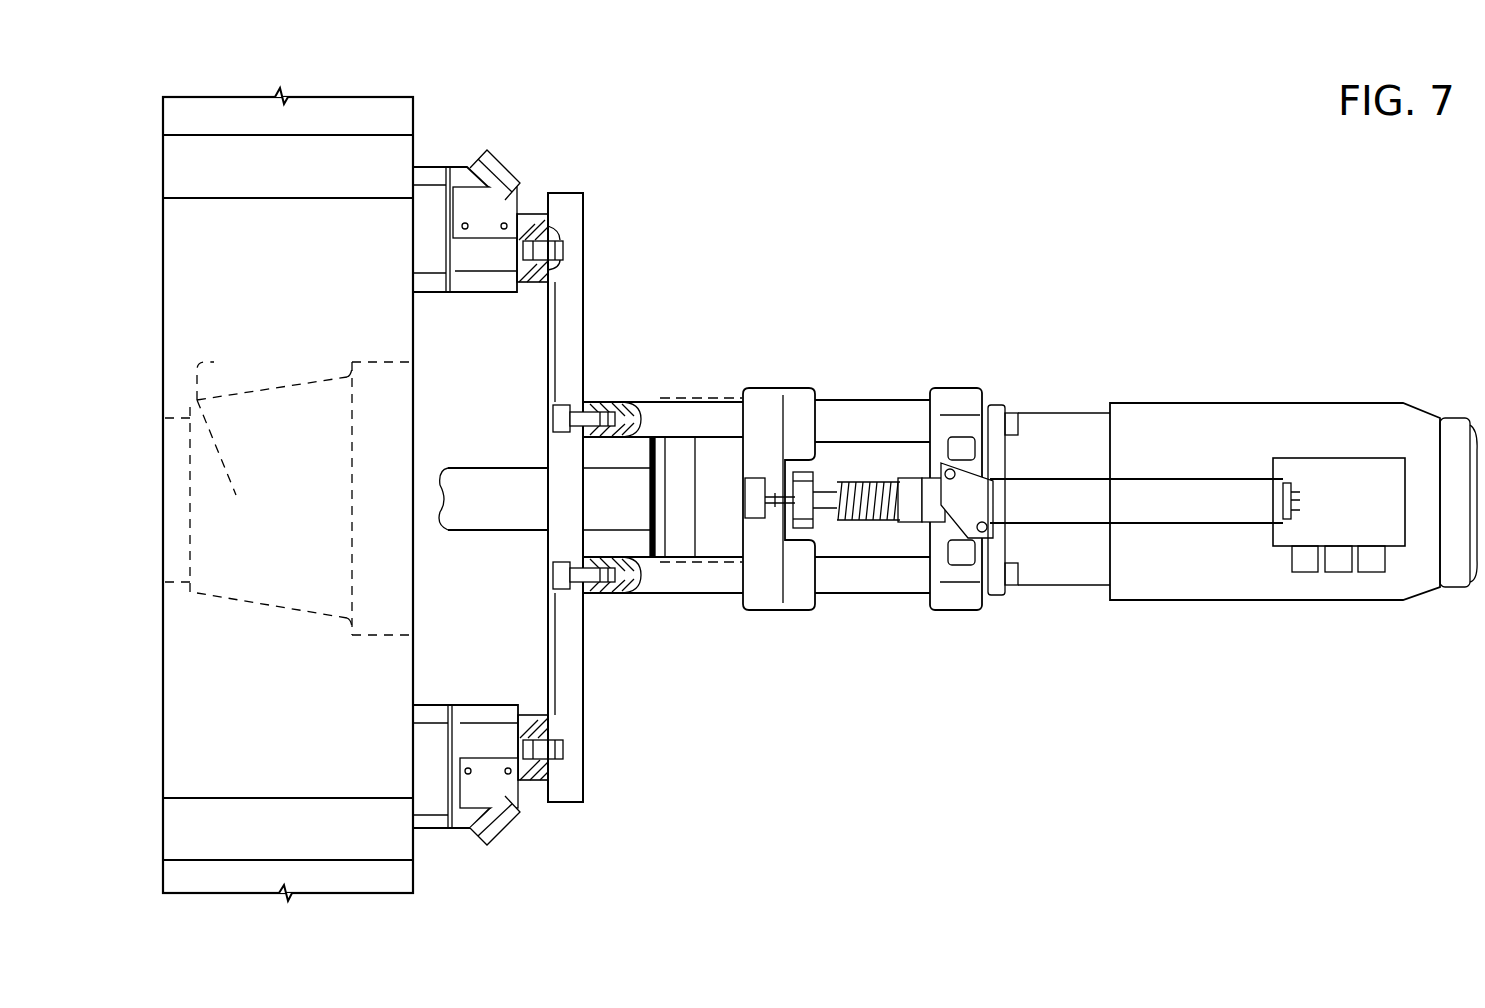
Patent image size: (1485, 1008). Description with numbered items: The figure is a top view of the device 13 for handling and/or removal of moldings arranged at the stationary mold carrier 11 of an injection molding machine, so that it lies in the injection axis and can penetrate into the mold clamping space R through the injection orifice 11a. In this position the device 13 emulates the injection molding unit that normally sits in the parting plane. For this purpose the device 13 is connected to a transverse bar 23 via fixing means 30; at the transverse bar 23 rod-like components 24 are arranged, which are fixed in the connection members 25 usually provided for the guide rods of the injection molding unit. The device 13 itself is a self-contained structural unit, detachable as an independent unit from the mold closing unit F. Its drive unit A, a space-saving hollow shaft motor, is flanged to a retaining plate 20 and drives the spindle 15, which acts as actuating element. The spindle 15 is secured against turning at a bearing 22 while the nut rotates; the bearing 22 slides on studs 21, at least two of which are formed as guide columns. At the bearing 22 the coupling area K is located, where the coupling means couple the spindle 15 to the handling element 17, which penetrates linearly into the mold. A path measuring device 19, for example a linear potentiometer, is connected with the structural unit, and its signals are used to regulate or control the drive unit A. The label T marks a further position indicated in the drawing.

The stationary mold carrier 11 is at (360, 122).
The injection orifice 11a is at (289, 488).
The device for handling and/or removal of moldings 13 is at (1046, 596).
The spindle 15 is at (870, 535).
The handling element 17 is at (497, 478).
The path measuring device 19 is at (1035, 492).
The retaining plate 20 is at (958, 398).
The studs 21 is at (655, 408).
The bearing 22 is at (755, 415).
The transverse bar 23 is at (583, 340).
The rod-like components 24 is at (528, 227).
The connection members 25 is at (478, 216).
The fixing means 30 is at (603, 596).
The drive unit A is at (1333, 425).
The coupling area K is at (718, 458).
The carrier T is at (598, 279).
The mold closing unit F is at (426, 602).
The mold clamping space R is at (138, 510).